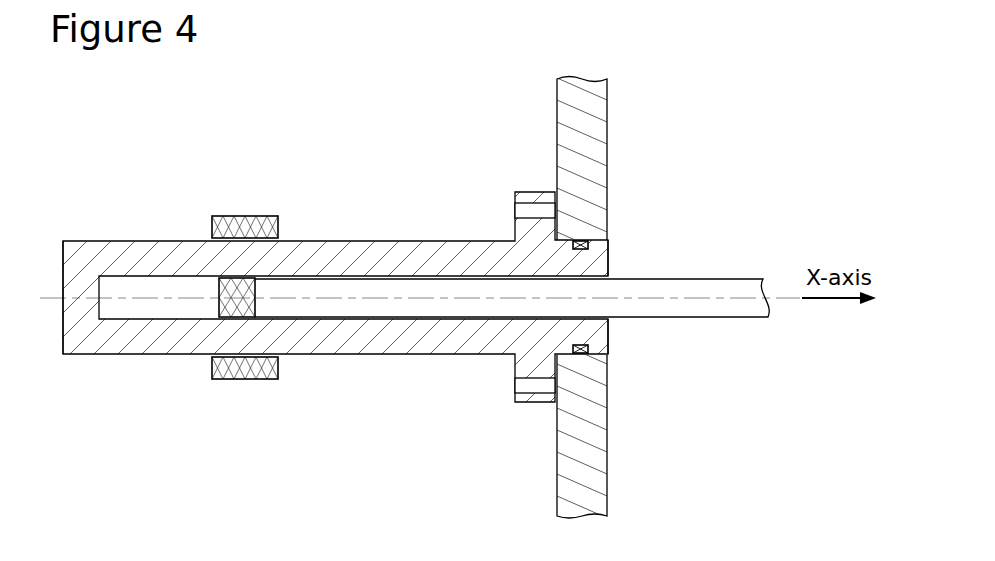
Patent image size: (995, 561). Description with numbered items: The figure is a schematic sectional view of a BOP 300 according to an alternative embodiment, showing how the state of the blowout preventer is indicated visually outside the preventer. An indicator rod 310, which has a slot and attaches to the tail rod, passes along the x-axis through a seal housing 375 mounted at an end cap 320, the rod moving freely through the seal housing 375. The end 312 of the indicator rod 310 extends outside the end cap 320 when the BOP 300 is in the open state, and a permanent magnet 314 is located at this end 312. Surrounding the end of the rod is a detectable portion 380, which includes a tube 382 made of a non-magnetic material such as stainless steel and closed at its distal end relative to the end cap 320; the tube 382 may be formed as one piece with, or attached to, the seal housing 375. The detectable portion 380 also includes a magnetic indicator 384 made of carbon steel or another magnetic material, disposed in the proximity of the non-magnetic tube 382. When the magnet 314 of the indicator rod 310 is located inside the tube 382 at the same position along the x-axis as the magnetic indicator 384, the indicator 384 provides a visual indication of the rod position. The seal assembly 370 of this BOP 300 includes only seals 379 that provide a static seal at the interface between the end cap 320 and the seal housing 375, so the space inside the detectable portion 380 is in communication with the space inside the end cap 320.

The BOP 300 is at (738, 95).
The indicator rod 310 is at (737, 307).
The end of the indicator rod 312 is at (283, 305).
The permanent magnet 314 is at (242, 314).
The end cap 320 is at (567, 497).
The seal assembly 370 is at (572, 351).
The seal housing 375 is at (600, 258).
The seals 379 is at (582, 228).
The detectable portion 380 is at (193, 337).
The tube 382 is at (101, 337).
The magnetic indicator 384 is at (263, 204).